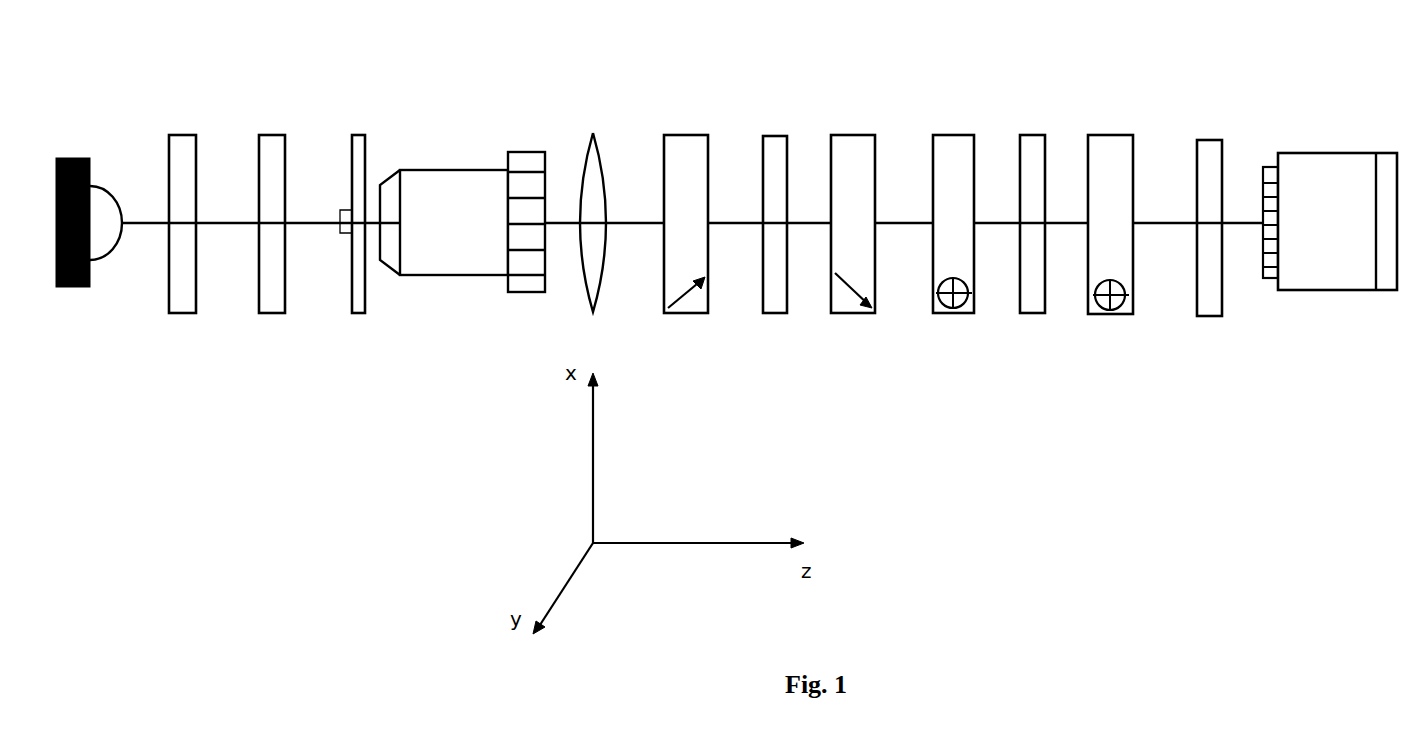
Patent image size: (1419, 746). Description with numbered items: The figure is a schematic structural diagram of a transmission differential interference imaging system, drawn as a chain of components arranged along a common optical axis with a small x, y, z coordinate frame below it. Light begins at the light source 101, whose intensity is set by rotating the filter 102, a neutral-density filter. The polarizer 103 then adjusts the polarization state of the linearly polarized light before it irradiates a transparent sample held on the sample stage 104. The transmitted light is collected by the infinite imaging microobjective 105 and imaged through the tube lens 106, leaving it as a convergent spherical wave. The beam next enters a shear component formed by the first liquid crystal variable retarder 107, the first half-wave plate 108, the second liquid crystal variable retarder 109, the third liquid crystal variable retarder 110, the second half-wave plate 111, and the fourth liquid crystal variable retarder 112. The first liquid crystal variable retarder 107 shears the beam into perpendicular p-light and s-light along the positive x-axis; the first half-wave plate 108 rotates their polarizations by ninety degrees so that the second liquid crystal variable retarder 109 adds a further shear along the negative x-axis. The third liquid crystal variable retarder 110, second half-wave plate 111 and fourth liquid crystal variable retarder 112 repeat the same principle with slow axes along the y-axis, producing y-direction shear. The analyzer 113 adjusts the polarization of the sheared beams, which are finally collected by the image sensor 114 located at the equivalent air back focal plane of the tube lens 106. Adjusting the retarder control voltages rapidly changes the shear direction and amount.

The light source 101 is at (73, 157).
The filter 102 is at (180, 135).
The polarizer 103 is at (272, 135).
The sample stage 104 is at (359, 135).
The infinite imaging microobjective 105 is at (457, 168).
The tube lens 106 is at (587, 135).
The first liquid crystal variable retarder 107 is at (673, 135).
The first half-wave plate 108 is at (773, 136).
The second liquid crystal variable retarder 109 is at (848, 135).
The third liquid crystal variable retarder 110 is at (950, 135).
The second half-wave plate 111 is at (1032, 135).
The fourth liquid crystal variable retarder 112 is at (1108, 135).
The analyzer 113 is at (1205, 140).
The image sensor 114 is at (1327, 153).